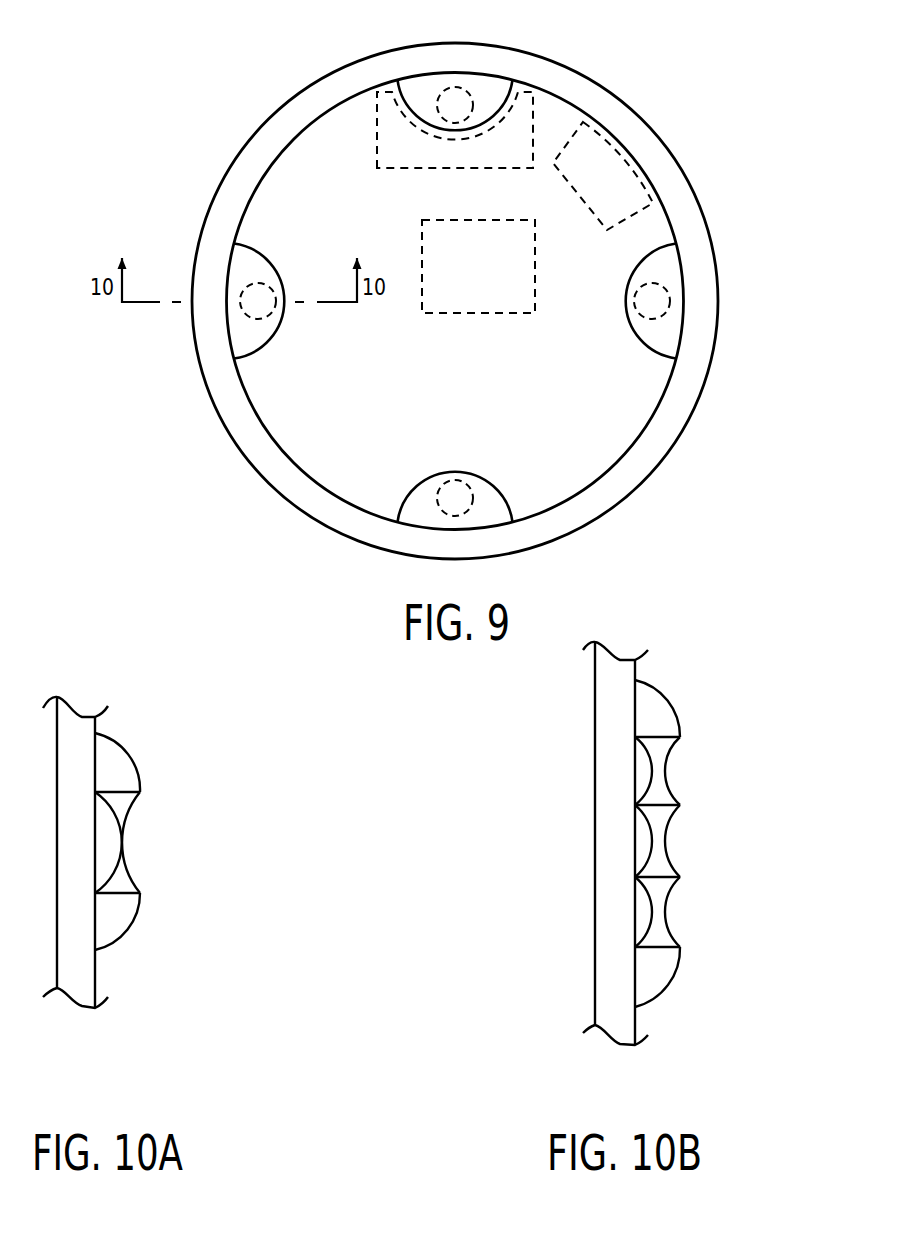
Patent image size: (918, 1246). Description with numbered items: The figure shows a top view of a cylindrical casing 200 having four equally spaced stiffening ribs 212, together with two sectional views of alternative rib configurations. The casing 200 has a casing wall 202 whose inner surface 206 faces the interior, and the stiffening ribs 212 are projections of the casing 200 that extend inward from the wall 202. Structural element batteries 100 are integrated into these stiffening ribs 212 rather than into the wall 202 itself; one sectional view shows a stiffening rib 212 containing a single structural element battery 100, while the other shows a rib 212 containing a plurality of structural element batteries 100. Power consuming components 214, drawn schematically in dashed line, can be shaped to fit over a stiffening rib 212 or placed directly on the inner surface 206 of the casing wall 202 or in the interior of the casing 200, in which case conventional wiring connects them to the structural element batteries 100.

In FIG. 9, the casing 200 is at (479, 293).
In FIG. 9, the casing wall 202 is at (582, 72).
In FIG. 9, the inner surface 206 is at (615, 460).
In FIG. 9, the stiffening rib 212 is at (640, 344).
In FIG. 10A, the stiffening rib 212 is at (141, 745).
In FIG. 10B, the stiffening rib 212 is at (688, 698).
In FIG. 9, the power consuming component 214 is at (493, 172).
In FIG. 10A, the structural element battery 100 is at (124, 842).
In FIG. 10B, the structural element battery 100 is at (663, 910).